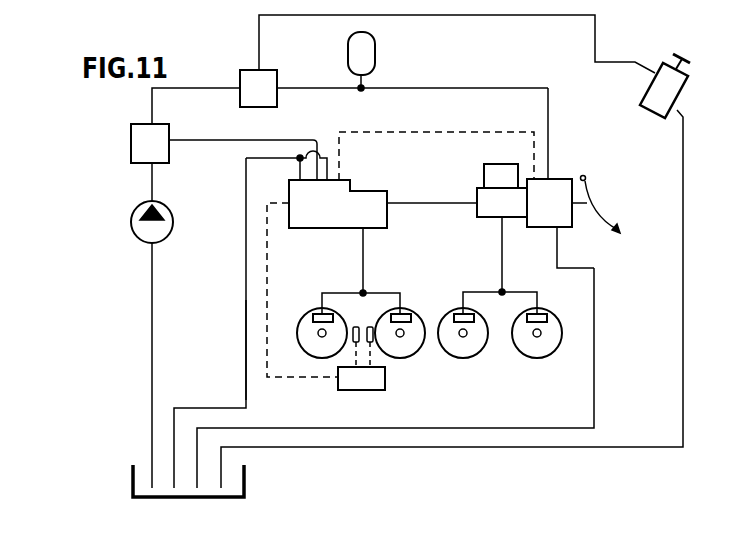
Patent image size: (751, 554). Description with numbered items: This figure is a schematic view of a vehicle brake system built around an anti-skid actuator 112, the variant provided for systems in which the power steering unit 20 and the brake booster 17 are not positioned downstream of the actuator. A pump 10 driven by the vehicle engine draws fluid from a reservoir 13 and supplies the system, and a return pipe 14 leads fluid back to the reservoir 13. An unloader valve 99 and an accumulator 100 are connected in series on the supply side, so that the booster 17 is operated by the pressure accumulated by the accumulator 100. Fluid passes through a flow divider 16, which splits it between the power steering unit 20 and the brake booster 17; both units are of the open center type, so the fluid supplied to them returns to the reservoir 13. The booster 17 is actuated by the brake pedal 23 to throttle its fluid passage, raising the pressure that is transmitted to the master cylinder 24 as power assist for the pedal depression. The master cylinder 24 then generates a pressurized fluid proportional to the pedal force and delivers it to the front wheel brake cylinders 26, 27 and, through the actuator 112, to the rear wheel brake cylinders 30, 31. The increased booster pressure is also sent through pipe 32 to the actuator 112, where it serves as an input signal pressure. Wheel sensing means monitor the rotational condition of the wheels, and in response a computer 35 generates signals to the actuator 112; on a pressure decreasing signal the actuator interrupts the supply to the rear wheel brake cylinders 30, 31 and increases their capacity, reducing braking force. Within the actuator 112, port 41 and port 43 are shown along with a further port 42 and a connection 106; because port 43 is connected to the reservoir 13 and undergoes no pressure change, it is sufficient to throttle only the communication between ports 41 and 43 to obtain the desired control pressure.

The pump 10 is at (173, 222).
The reservoir 13 is at (141, 468).
The return pipe 14 is at (245, 368).
The flow divider 16 is at (169, 126).
The brake booster 17 is at (564, 179).
The power steering unit 20 is at (640, 108).
The brake pedal 23 is at (597, 208).
The master cylinder 24 is at (477, 194).
The front wheel brake cylinder 26 is at (459, 313).
The front wheel brake cylinder 27 is at (543, 313).
The rear wheel brake cylinder 30 is at (318, 313).
The rear wheel brake cylinder 31 is at (405, 313).
The pipe 32 is at (470, 131).
The computer 35 is at (386, 380).
The port 41 is at (312, 181).
The valve port 42 is at (327, 182).
The port 43 is at (298, 183).
The unloader valve 99 is at (246, 69).
The accumulator 100 is at (376, 56).
The pressure line 106 is at (300, 140).
The actuator 112 is at (353, 189).